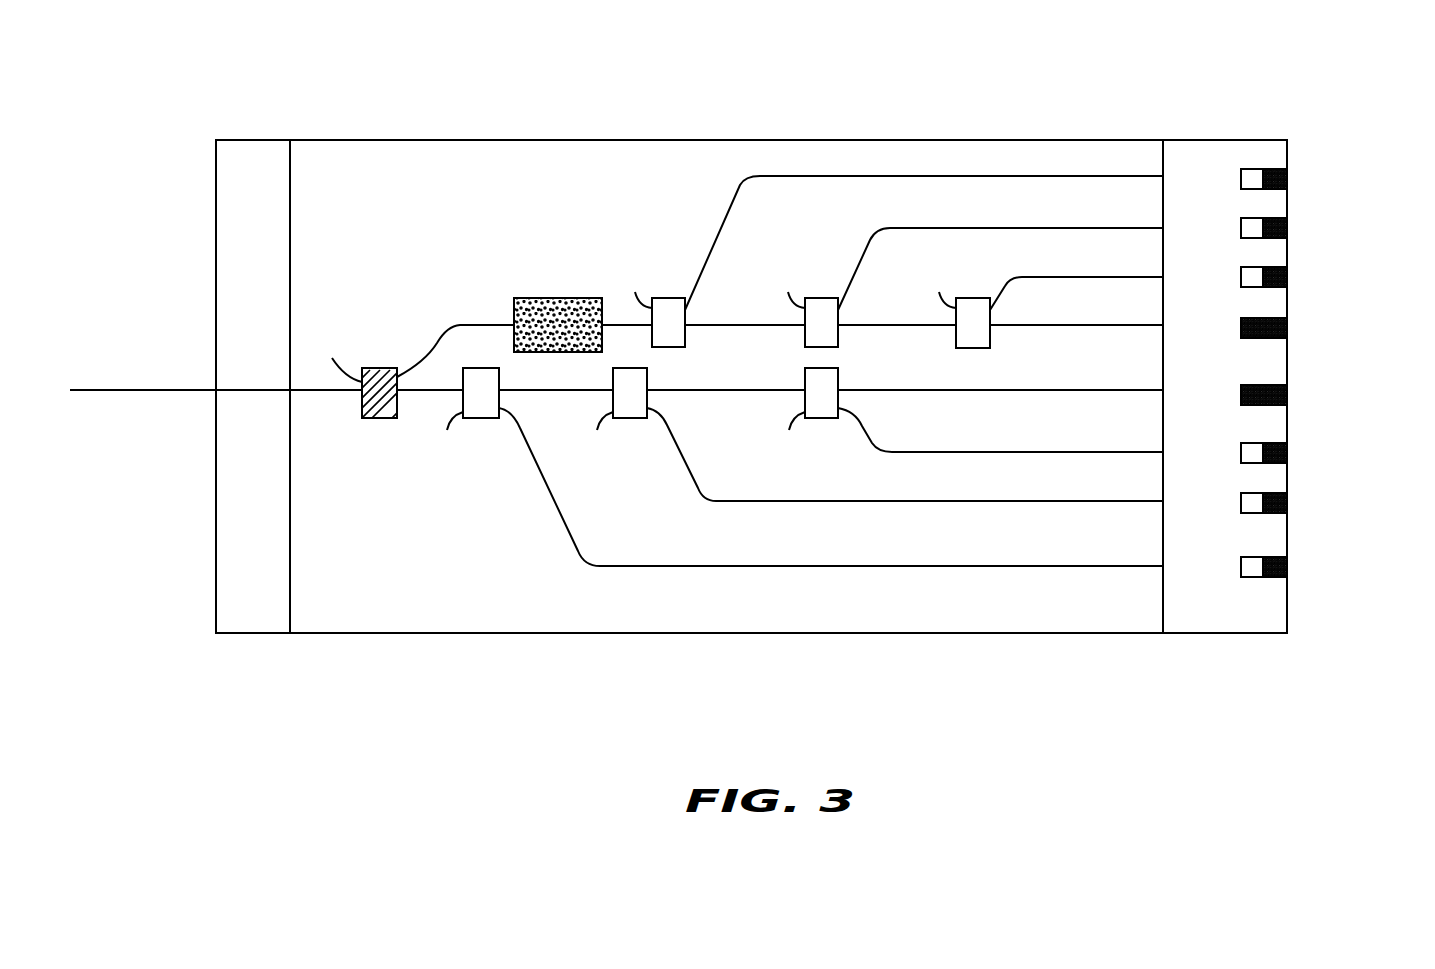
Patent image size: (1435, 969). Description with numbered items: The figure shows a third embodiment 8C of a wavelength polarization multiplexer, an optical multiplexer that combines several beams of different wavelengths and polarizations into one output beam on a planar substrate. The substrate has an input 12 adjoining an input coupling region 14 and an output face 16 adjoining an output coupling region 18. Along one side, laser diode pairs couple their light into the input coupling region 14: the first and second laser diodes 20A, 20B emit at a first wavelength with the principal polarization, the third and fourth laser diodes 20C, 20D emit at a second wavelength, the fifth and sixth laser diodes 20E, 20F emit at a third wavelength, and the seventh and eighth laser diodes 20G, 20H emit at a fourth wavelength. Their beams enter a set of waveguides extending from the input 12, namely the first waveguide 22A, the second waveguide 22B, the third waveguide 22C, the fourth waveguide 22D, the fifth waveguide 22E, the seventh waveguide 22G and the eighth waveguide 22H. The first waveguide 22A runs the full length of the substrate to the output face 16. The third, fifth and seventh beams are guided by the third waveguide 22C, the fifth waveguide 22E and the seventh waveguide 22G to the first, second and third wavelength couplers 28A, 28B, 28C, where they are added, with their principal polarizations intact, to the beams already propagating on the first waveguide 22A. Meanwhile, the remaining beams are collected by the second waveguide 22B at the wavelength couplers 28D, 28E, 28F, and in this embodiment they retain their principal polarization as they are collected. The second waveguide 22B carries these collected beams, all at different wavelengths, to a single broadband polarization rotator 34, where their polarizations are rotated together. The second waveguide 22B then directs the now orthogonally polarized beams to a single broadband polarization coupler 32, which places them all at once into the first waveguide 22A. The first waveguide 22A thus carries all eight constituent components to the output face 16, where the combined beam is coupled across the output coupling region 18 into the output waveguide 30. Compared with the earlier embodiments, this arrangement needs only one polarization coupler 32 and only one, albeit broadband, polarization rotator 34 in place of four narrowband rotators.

The third embodiment 8C is at (1084, 56).
The input 12 is at (1163, 617).
The input coupling region 14 is at (1265, 623).
The output face 16 is at (290, 560).
The output coupling region 18 is at (270, 225).
The output waveguide 30 is at (147, 390).
The broadband polarization coupler 32 is at (380, 368).
The broadband polarization rotator 34 is at (558, 298).
The first wavelength coupler 28A is at (821, 420).
The second wavelength coupler 28B is at (628, 420).
The third wavelength coupler 28C is at (480, 420).
The wavelength coupler 28D is at (972, 348).
The wavelength coupler 28E is at (820, 298).
The wavelength coupler 28F is at (668, 298).
The first waveguide 22A is at (1023, 390).
The second waveguide 22B is at (1023, 326).
The third waveguide 22C is at (965, 455).
The fourth waveguide 22D is at (1025, 227).
The fifth waveguide 22E is at (965, 503).
The seventh waveguide 22G is at (965, 567).
The eighth waveguide 22H is at (960, 176).
The first laser diode 20A is at (1287, 395).
The second laser diode 20B is at (1287, 328).
The third laser diode 20C is at (1287, 453).
The fourth laser diode 20D is at (1287, 277).
The fifth laser diode 20E is at (1287, 503).
The sixth laser diode 20F is at (1287, 228).
The seventh laser diode 20G is at (1287, 567).
The eighth laser diode 20H is at (1287, 179).